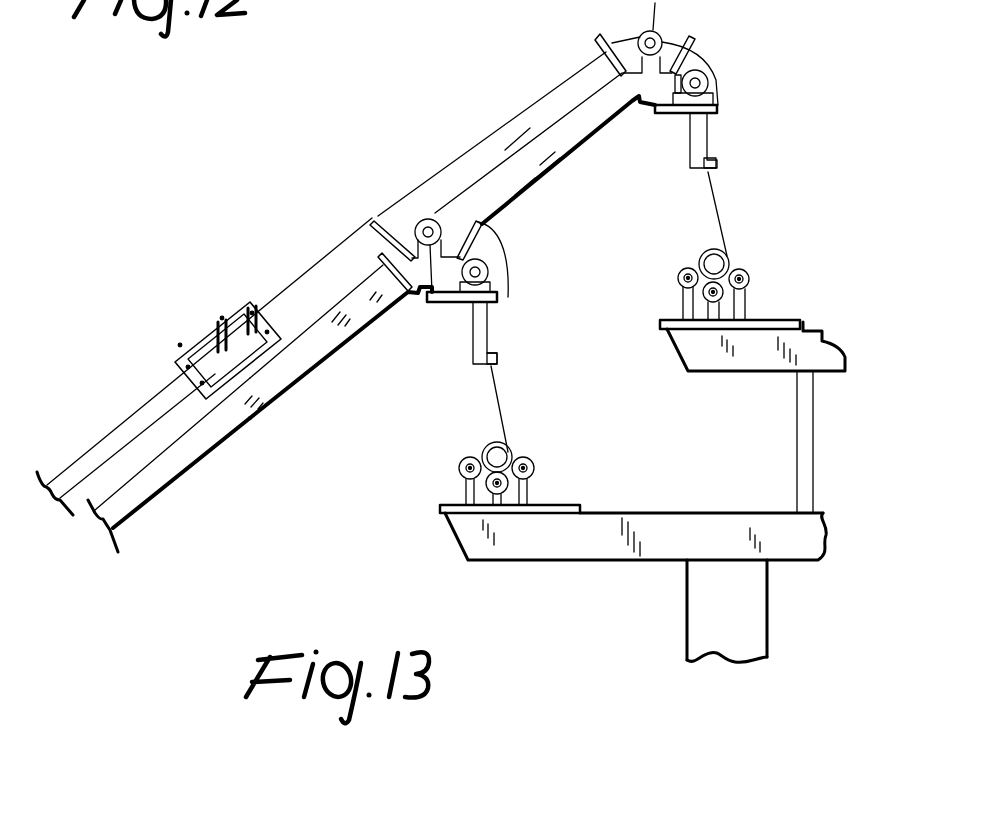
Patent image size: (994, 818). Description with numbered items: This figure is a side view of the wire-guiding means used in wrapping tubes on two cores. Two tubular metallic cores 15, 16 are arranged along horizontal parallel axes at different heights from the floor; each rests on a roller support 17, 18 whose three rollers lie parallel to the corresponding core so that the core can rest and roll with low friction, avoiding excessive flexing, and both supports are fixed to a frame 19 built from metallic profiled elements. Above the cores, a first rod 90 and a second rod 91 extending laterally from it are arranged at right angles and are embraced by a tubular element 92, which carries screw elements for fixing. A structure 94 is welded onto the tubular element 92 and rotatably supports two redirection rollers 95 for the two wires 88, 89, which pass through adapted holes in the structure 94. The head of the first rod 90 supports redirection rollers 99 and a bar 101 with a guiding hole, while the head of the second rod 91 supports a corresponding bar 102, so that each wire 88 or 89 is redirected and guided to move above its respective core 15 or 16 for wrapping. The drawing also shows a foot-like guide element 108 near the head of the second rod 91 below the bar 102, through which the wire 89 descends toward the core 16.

The tubular metallic core 15 is at (477, 476).
The tubular metallic core 16 is at (728, 257).
The roller support 17 is at (548, 468).
The roller support 18 is at (760, 305).
The frame 19 is at (796, 592).
The wire 88 is at (138, 434).
The wire 89 is at (92, 446).
The first rod 90 is at (168, 468).
The second rod 91 is at (583, 123).
The tubular element 92 is at (310, 358).
The structure 94 is at (206, 300).
The redirection rollers 95 is at (204, 370).
The redirection rollers 99 is at (427, 303).
The bar 101 is at (380, 250).
The bar 102 is at (597, 37).
The cable guide foot 108 is at (717, 168).